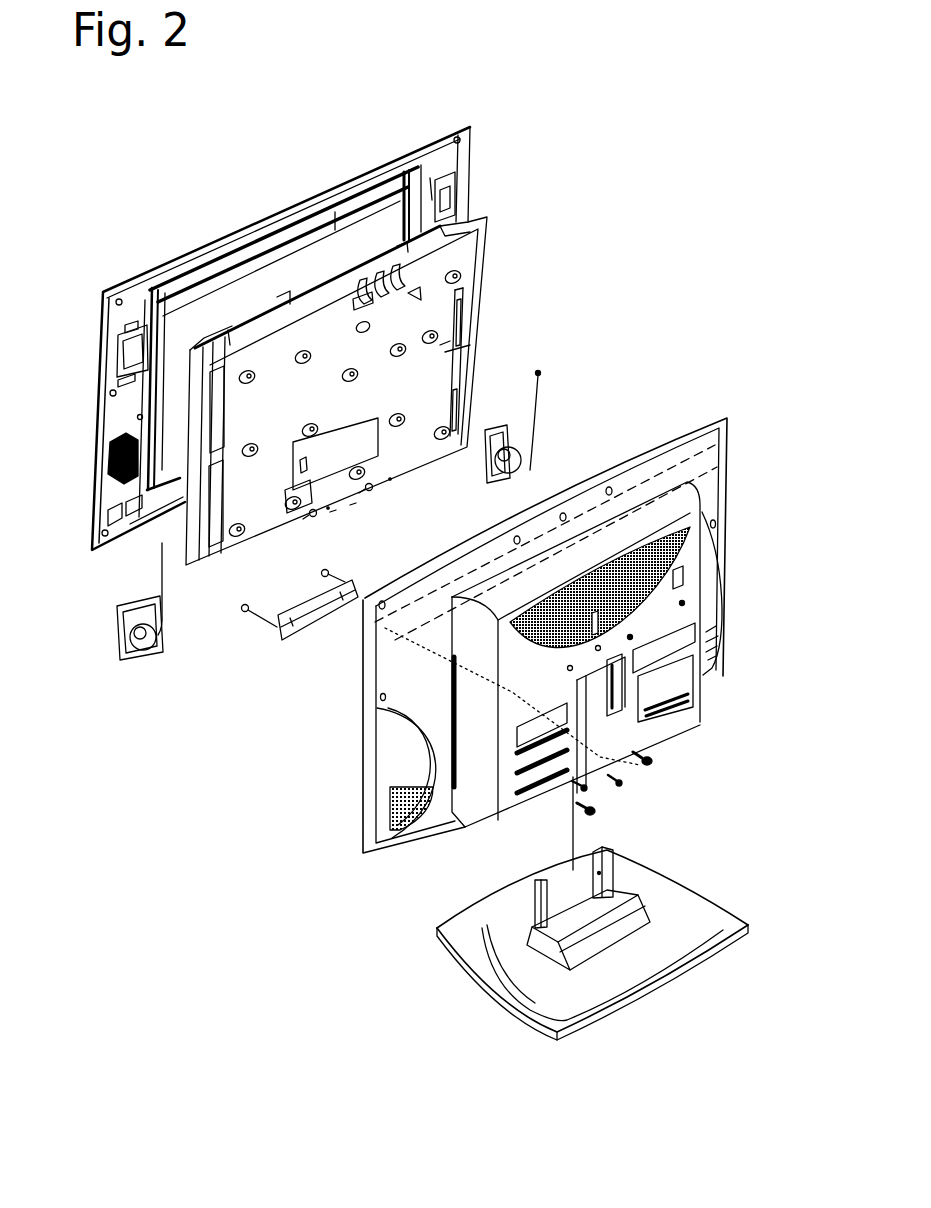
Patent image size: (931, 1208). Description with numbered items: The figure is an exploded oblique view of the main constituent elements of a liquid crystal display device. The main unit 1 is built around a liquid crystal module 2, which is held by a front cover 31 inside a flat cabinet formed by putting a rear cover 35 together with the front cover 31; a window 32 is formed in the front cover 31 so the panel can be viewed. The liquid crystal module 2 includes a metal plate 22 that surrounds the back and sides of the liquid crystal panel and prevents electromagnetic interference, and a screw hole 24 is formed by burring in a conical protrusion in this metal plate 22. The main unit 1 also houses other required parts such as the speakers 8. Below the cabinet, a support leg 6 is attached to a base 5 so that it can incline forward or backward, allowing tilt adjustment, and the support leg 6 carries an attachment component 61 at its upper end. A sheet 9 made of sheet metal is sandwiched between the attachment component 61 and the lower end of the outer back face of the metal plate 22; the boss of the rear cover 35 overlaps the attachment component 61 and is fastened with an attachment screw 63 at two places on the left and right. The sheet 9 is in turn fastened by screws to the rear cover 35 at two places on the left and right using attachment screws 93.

The main unit 1 is at (697, 345).
The liquid crystal module 2 is at (485, 268).
The base 5 is at (712, 897).
The support leg 6 is at (620, 887).
The speakers 8 is at (142, 658).
The sheet 9 is at (322, 630).
The metal plate 22 is at (480, 330).
The screw hole 24 is at (372, 489).
The front cover 31 is at (437, 127).
The window 32 is at (325, 187).
The rear cover 35 is at (730, 465).
The attachment component 61 is at (607, 848).
The attachment screw 63 is at (652, 754).
The attachment screws 93 is at (247, 610).